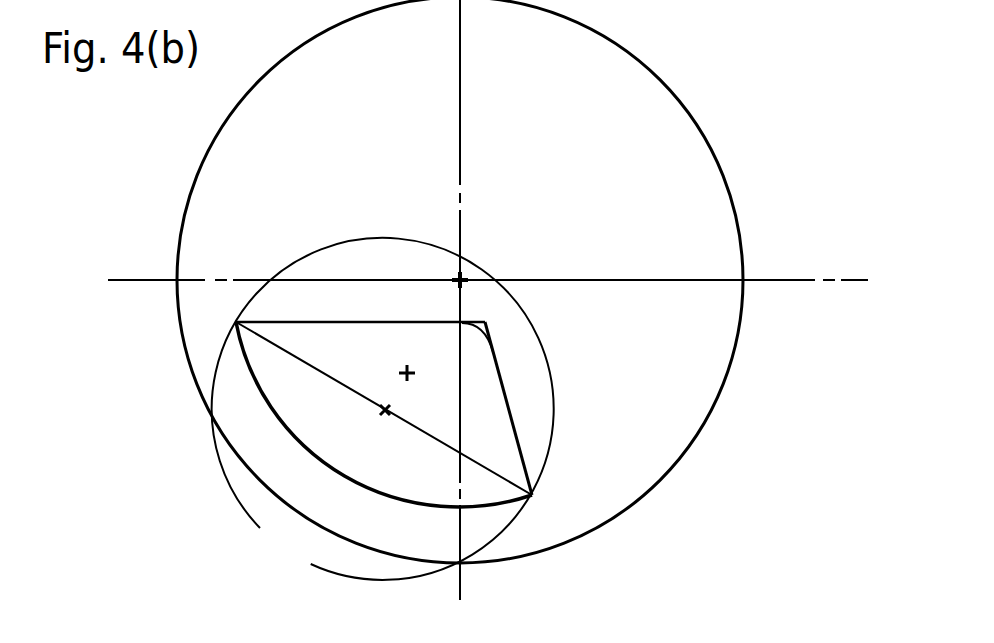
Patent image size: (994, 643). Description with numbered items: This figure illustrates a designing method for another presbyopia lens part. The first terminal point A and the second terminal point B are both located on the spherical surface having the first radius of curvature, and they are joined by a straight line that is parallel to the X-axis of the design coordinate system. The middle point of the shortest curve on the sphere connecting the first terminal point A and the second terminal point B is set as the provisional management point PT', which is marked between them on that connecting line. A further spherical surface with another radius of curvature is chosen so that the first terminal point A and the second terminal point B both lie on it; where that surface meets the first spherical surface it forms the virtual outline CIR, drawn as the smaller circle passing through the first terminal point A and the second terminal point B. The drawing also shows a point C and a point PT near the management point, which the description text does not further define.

The first terminal point A is at (345, 311).
The second terminal point B is at (521, 426).
The point C is at (480, 321).
The point PT is at (408, 356).
The provisional management point PT' is at (374, 433).
The virtual outline CIR is at (383, 409).